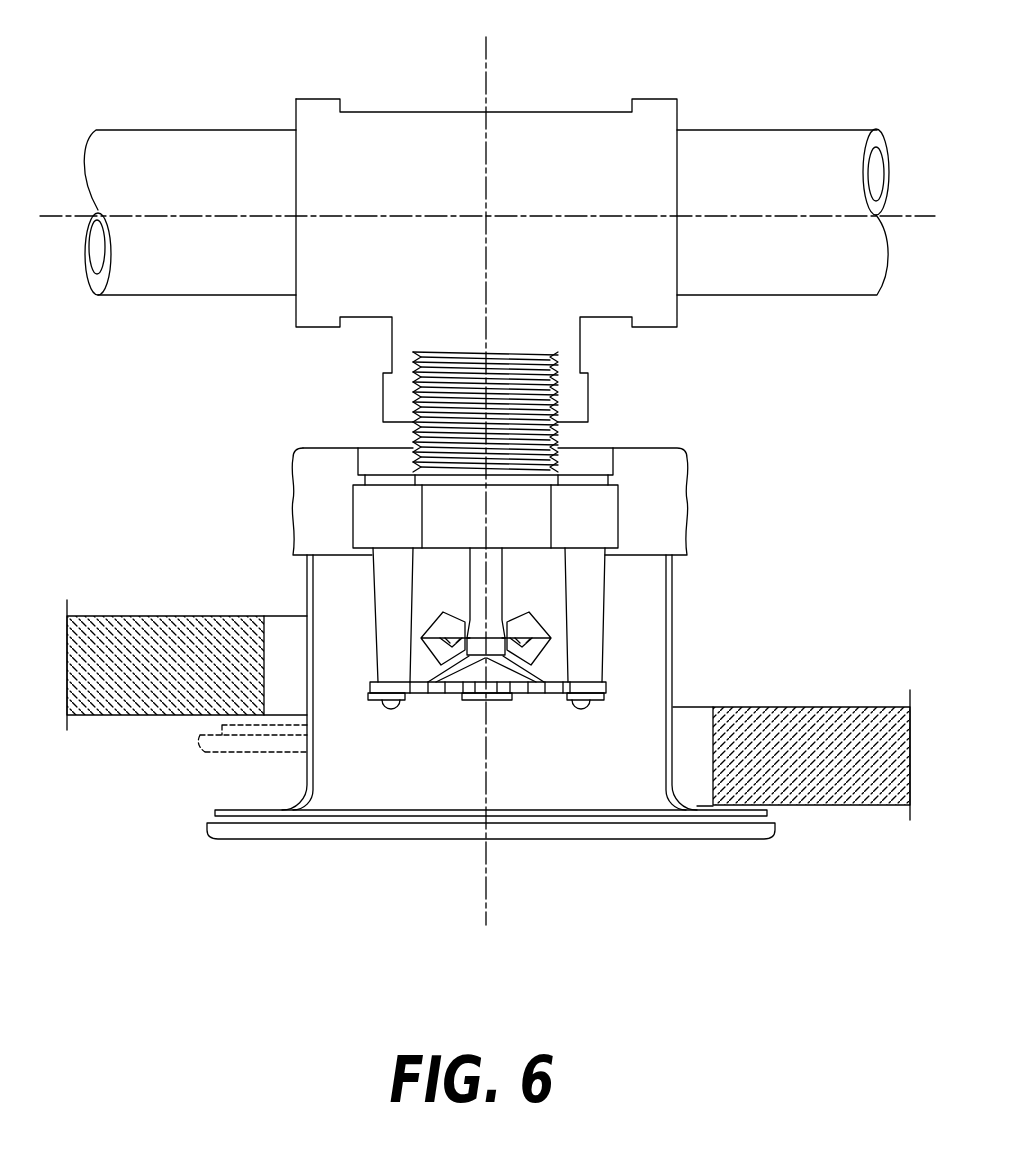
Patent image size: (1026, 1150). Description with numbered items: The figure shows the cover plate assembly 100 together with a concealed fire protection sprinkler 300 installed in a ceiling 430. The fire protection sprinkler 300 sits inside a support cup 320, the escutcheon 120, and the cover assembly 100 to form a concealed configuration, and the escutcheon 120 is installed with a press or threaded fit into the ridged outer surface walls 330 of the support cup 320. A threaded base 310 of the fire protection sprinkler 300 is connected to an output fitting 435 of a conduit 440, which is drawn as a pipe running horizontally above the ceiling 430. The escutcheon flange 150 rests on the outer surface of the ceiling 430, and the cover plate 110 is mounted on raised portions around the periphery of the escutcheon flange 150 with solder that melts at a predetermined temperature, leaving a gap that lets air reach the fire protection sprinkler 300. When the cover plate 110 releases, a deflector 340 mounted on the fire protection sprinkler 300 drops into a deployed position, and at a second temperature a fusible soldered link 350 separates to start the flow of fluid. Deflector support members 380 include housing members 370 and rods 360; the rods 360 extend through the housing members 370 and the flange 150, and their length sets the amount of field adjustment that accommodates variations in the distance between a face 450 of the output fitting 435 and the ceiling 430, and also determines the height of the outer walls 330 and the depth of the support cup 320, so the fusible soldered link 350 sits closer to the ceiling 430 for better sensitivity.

The cover plate assembly 100 is at (705, 571).
The cover plate 110 is at (510, 845).
The escutcheon 120 is at (675, 642).
The escutcheon flange 150 is at (688, 812).
The concealed fire protection sprinkler 300 is at (432, 701).
The threaded base 310 is at (522, 353).
The support cup 320 is at (292, 462).
The ridged outer surface walls 330 is at (688, 465).
The deflector 340 is at (454, 698).
The fusible soldered link 350 is at (467, 580).
The rods 360 is at (387, 602).
The housing members 370 is at (370, 515).
The deflector support members 380 is at (382, 460).
The ceiling 430 is at (128, 700).
The output fitting 435 is at (385, 130).
The conduit 440 is at (810, 152).
The face 450 is at (573, 422).